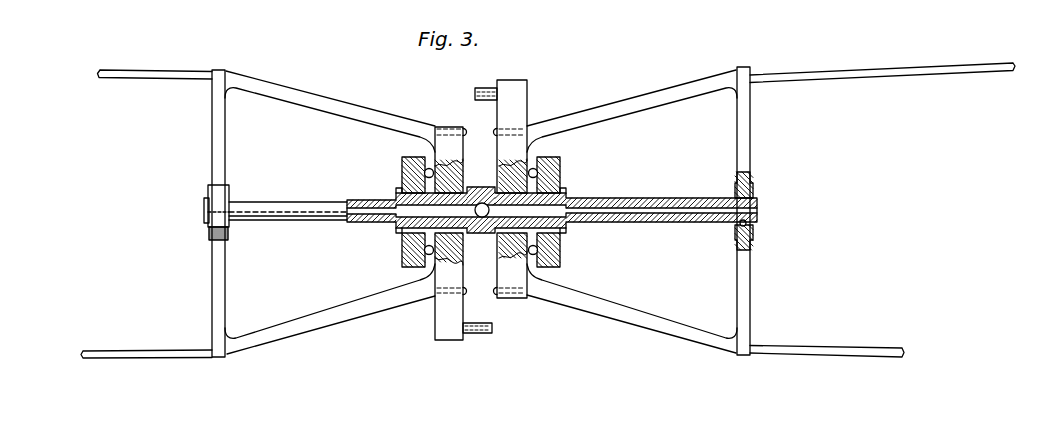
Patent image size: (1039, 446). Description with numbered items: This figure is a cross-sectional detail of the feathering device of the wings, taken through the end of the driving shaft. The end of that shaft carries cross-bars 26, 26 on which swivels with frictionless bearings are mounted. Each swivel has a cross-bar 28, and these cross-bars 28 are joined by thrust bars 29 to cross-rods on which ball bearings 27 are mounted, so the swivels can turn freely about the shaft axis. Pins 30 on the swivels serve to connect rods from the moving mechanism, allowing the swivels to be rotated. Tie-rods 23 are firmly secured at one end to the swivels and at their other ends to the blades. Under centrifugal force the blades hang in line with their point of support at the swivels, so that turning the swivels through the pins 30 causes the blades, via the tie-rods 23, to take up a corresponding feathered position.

The tie-rods 23 is at (134, 76).
The cross-bars 26 is at (317, 198).
The ball bearings 27 is at (560, 255).
The cross-bars 28 is at (212, 133).
The thrust bars 29 is at (310, 108).
The pins 30 is at (475, 93).